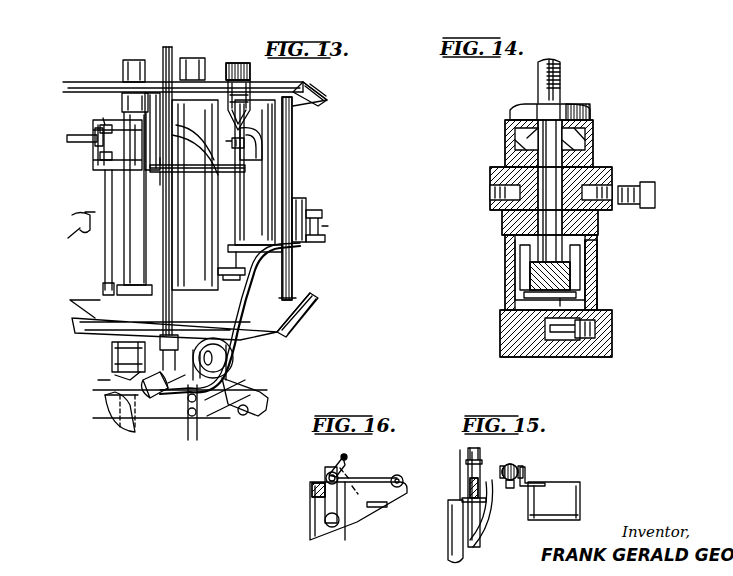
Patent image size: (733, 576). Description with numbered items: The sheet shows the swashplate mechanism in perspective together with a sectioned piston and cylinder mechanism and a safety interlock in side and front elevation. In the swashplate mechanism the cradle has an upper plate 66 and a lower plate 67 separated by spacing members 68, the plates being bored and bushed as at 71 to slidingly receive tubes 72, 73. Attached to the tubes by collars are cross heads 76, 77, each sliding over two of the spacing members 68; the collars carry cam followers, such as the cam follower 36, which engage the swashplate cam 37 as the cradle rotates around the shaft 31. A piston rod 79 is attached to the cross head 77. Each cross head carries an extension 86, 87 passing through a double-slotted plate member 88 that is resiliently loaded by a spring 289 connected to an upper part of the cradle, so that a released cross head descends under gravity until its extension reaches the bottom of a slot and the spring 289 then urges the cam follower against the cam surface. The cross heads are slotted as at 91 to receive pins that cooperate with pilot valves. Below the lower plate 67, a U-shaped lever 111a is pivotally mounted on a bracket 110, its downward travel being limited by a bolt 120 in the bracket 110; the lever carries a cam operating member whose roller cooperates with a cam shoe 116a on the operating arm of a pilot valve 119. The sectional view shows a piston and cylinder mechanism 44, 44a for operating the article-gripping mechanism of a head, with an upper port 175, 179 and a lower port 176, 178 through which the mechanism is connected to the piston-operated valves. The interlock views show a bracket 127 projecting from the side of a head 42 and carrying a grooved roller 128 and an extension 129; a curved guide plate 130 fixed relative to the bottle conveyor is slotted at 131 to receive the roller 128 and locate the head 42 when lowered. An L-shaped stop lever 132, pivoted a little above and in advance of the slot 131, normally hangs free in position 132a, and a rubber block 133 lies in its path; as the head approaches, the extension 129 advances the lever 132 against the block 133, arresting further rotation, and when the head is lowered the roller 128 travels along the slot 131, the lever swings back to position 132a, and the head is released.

In FIG. 13, the tube 73 is at (130, 60).
In FIG. 13, the shaft 31 is at (188, 60).
In FIG. 13, the swashplate cam 37 is at (198, 120).
In FIG. 13, the spring 289 is at (240, 63).
In FIG. 13, the bushed bore 71 is at (125, 98).
In FIG. 13, the slot 91 is at (97, 127).
In FIG. 13, the cross head 77 is at (120, 148).
In FIG. 13, the piston rod 79 is at (107, 180).
In FIG. 13, the extension 87 is at (187, 181).
In FIG. 13, the upper plate 66 is at (317, 95).
In FIG. 13, the tube 72 is at (250, 119).
In FIG. 13, the double-slotted plate member 88 is at (255, 140).
In FIG. 13, the spacing member 68 is at (292, 163).
In FIG. 13, the cross head 76 is at (296, 205).
In FIG. 13, the extension 86 is at (280, 257).
In FIG. 13, the cam follower 36 is at (218, 268).
In FIG. 13, the lower plate 67 is at (277, 332).
In FIG. 13, the bracket 110 is at (227, 358).
In FIG. 13, the pilot valve 119 is at (122, 360).
In FIG. 13, the cam shoe 116a is at (125, 422).
In FIG. 13, the U-shaped lever 111a is at (167, 417).
In FIG. 13, the bolt 120 is at (212, 425).
In FIG. 14, the upper port 175 is at (503, 188).
In FIG. 14, the upper port 179 is at (490, 197).
In FIG. 14, the piston and cylinder mechanism 44 is at (631, 246).
In FIG. 14, the piston and cylinder mechanism 44a is at (660, 267).
In FIG. 14, the lower port 176 is at (605, 333).
In FIG. 14, the lower port 178 is at (612, 340).
In FIG. 16, the curved guide plate 130 is at (357, 520).
In FIG. 15, the curved guide plate 130 is at (478, 540).
In FIG. 16, the slot 131 is at (330, 507).
In FIG. 15, the slot 131 is at (482, 520).
In FIG. 16, the L-shaped stop lever 132 is at (337, 465).
In FIG. 15, the L-shaped stop lever 132 is at (478, 460).
In FIG. 16, the free-hanging position of stop lever 132a is at (350, 468).
In FIG. 16, the block 133 is at (310, 490).
In FIG. 15, the block 133 is at (470, 486).
In FIG. 15, the extension 129 is at (505, 470).
In FIG. 15, the grooved roller 128 is at (510, 488).
In FIG. 15, the bracket 127 is at (525, 480).
In FIG. 15, the head 42 is at (575, 485).